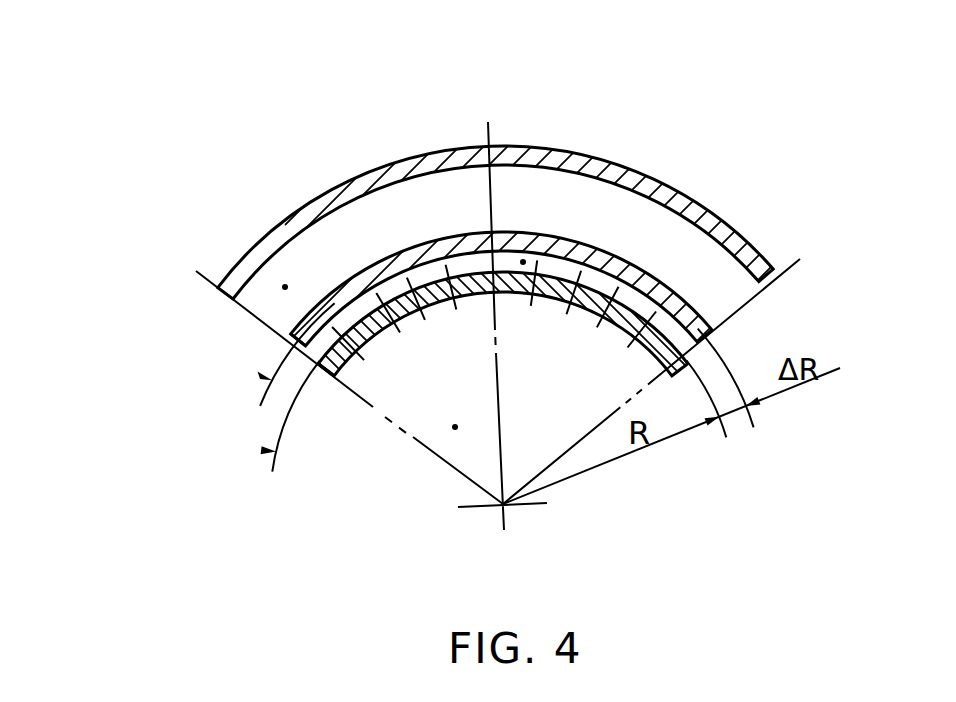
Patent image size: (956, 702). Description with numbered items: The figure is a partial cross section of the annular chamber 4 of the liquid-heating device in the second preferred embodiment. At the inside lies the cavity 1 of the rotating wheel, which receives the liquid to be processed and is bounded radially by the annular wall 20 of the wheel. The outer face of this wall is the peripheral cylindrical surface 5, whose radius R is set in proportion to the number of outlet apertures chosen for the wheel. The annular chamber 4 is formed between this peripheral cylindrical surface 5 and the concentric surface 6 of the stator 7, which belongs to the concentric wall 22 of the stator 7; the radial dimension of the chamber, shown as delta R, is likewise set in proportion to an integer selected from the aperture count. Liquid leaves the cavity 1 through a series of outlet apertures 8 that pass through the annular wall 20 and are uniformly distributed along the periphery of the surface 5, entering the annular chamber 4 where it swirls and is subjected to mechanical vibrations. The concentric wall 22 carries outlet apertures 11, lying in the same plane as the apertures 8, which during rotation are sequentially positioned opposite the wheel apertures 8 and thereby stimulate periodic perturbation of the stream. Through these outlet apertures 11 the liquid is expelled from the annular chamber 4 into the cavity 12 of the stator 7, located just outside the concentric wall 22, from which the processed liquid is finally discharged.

The cavity 1 is at (455, 427).
The annular chamber 4 is at (523, 262).
The peripheral cylindrical surface 5 is at (262, 450).
The concentric surface 6 is at (259, 376).
The stator 7 is at (758, 258).
The outlet apertures 8 is at (333, 340).
The outlet apertures 11 is at (345, 278).
The cavity 12 is at (285, 287).
The annular wall 20 is at (470, 273).
The concentric wall 22 is at (623, 253).